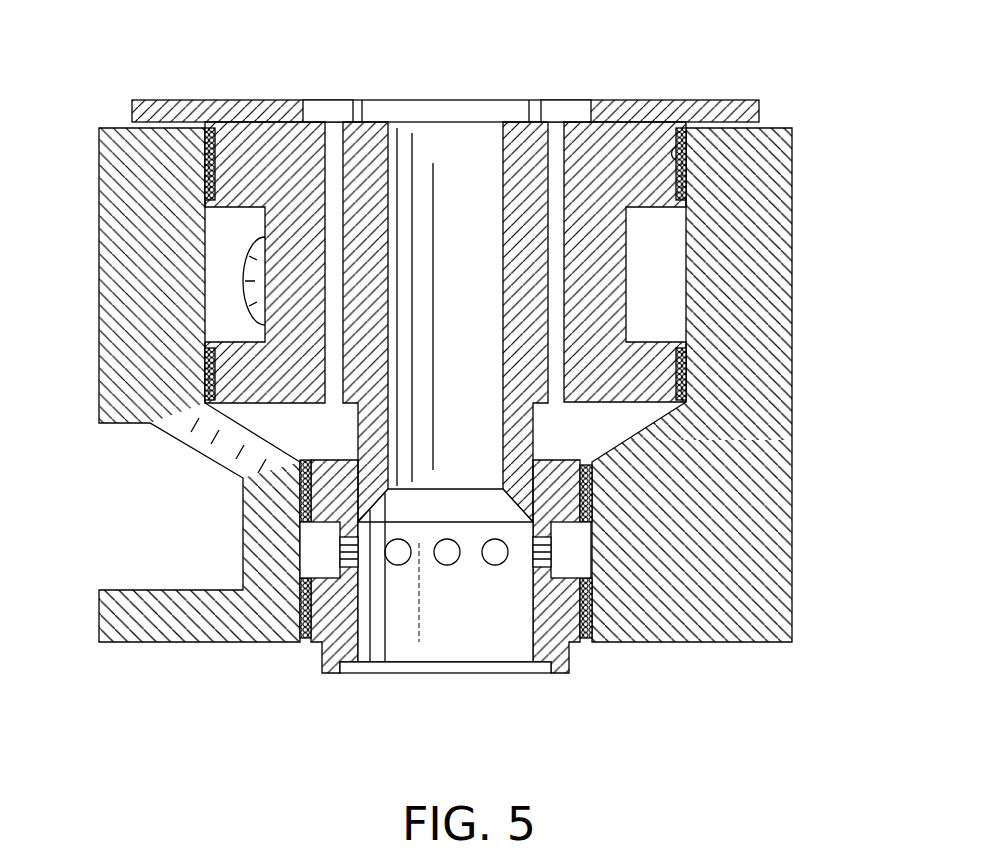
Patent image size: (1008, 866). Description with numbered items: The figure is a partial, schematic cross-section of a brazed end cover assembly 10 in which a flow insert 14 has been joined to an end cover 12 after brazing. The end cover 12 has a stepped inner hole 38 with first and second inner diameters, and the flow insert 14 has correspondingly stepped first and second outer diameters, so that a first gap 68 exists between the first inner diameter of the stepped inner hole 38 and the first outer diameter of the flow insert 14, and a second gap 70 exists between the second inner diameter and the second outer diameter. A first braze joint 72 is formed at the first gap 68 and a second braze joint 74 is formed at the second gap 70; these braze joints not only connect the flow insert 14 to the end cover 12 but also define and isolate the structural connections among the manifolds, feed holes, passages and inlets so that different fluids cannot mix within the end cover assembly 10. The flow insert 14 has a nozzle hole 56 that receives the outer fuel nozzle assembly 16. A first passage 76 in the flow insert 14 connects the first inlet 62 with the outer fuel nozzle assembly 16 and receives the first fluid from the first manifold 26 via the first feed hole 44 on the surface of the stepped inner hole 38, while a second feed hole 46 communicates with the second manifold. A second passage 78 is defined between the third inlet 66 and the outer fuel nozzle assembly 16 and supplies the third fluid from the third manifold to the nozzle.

The end cover assembly 10 is at (660, 64).
The end cover 12 is at (767, 157).
The flow insert 14 is at (262, 123).
The outer fuel nozzle assembly 16 is at (452, 142).
The first manifold 26 is at (156, 558).
The stepped inner hole 38 is at (613, 425).
The first feed hole 44 is at (232, 462).
The second feed hole 46 is at (257, 287).
The nozzle hole 56 is at (493, 676).
The first inlet 62 is at (335, 412).
The third inlet 66 is at (572, 572).
The first gap 68 is at (212, 207).
The second gap 70 is at (303, 530).
The first braze joint 72 is at (688, 170).
The second braze joint 74 is at (597, 492).
The first passage 76 is at (333, 158).
The second passage 78 is at (545, 548).